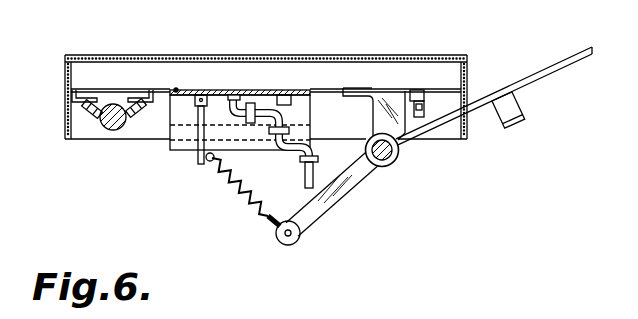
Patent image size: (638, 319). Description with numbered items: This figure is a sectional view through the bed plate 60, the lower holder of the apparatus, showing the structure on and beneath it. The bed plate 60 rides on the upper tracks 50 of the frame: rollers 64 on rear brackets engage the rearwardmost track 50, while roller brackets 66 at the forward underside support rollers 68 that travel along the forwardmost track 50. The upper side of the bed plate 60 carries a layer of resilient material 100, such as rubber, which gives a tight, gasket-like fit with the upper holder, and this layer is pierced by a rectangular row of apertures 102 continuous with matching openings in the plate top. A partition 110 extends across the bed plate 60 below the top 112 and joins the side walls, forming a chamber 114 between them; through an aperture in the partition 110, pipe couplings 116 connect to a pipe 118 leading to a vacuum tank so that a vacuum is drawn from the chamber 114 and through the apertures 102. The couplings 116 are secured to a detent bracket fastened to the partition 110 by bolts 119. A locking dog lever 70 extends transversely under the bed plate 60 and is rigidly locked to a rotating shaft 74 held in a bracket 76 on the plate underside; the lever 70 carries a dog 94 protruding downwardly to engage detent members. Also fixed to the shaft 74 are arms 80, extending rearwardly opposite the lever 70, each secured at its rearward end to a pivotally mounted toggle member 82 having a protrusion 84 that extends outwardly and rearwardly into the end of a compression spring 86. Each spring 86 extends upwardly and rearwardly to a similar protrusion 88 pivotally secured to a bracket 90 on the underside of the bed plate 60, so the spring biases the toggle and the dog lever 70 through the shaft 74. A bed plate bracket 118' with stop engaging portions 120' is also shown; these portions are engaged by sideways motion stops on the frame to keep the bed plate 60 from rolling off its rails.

The bed plate 60 is at (58, 79).
The layer of resilient material 100 is at (66, 56).
The apertures 102 is at (75, 55).
The chamber 114 is at (190, 71).
The top 112 is at (222, 62).
The partition 110 is at (103, 90).
The bed plate bracket 118' is at (161, 81).
The bolts 119 is at (198, 95).
The tracks 50 is at (113, 131).
The rollers 64 is at (84, 106).
The brackets 90 is at (176, 126).
The stop engaging portions 120' is at (225, 135).
The pipe couplings 116 is at (283, 115).
The pipe 118 is at (294, 173).
The protrusions 88 is at (207, 163).
The compression springs 86 is at (243, 195).
The protrusion 84 is at (268, 219).
The toggle member 82 is at (279, 245).
The arms 80 is at (333, 207).
The rotating shaft 74 is at (392, 161).
The bracket 76 is at (371, 111).
The roller brackets 66 is at (408, 101).
The rollers 68 is at (425, 108).
The locking dog lever 70 is at (536, 73).
The dog 94 is at (508, 108).